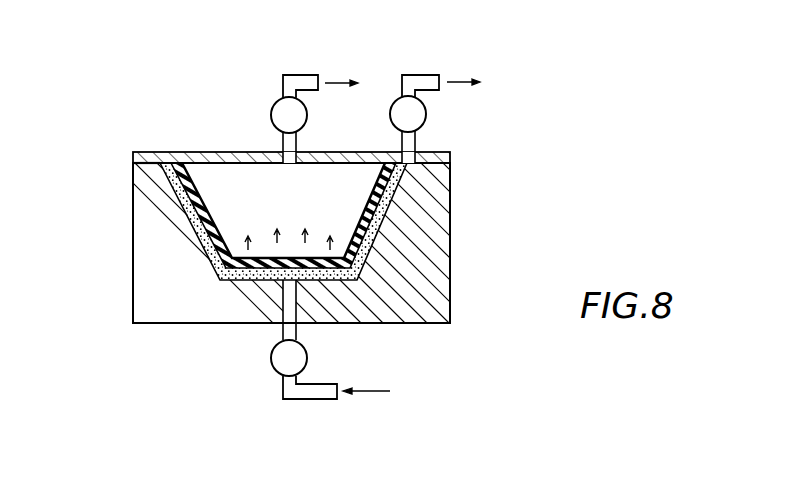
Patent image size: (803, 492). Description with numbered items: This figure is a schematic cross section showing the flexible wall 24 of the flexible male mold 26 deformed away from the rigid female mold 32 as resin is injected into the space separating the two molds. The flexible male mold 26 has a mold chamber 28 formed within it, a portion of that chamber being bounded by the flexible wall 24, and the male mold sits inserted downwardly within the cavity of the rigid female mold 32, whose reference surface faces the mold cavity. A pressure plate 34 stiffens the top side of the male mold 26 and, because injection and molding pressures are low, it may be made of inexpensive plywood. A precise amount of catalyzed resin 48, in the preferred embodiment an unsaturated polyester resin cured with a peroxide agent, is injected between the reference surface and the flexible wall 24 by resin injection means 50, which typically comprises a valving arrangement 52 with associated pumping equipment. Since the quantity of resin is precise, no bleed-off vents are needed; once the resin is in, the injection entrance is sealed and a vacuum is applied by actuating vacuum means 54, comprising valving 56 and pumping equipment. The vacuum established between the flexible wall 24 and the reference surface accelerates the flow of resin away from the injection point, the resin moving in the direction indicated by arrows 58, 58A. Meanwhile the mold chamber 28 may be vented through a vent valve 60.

The flexible wall 24 is at (318, 238).
The flexible male mold 26 is at (134, 167).
The mold chamber 28 is at (240, 182).
The rigid female mold 32 is at (133, 292).
The pressure plate 34 is at (150, 152).
The catalyzed resin 48 is at (228, 282).
The resin injection means 50 is at (427, 404).
The valving arrangement 52 is at (270, 368).
The vacuum means 54 is at (372, 48).
The valving 56 is at (426, 112).
The arrows indicating direction of resin flow 58 is at (393, 225).
The arrows indicating direction of resin flow 58A is at (183, 228).
The vent valve 60 is at (272, 100).